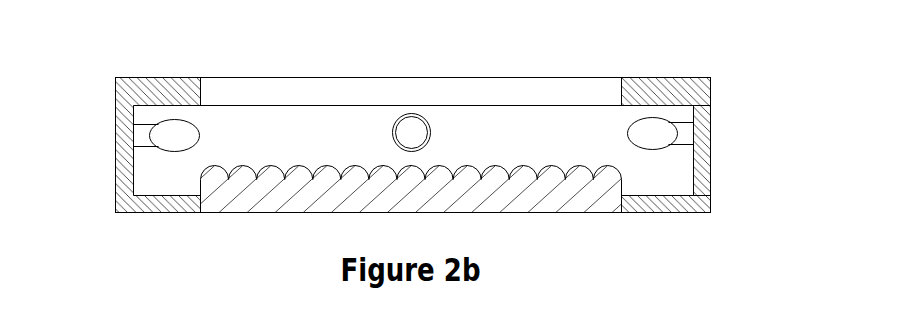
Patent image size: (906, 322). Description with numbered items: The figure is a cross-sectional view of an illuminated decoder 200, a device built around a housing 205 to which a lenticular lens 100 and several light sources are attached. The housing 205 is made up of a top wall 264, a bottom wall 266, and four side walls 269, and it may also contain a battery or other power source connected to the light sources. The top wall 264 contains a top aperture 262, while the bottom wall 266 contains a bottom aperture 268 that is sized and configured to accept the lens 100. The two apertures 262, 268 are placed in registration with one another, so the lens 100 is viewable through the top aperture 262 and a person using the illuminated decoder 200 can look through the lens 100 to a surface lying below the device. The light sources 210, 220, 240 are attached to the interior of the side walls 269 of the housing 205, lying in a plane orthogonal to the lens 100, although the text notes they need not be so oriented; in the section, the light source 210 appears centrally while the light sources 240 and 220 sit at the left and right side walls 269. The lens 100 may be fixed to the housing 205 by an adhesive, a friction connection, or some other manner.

The lenticular lens 100 is at (582, 212).
The illuminated decoder 200 is at (613, 32).
The housing 205 is at (115, 152).
The light source 210 is at (424, 119).
The light source 220 is at (677, 143).
The light source 240 is at (171, 119).
The top aperture 262 is at (262, 84).
The top wall 264 is at (667, 77).
The bottom wall 266 is at (135, 213).
The bottom aperture 268 is at (194, 208).
The side walls 269 is at (710, 108).